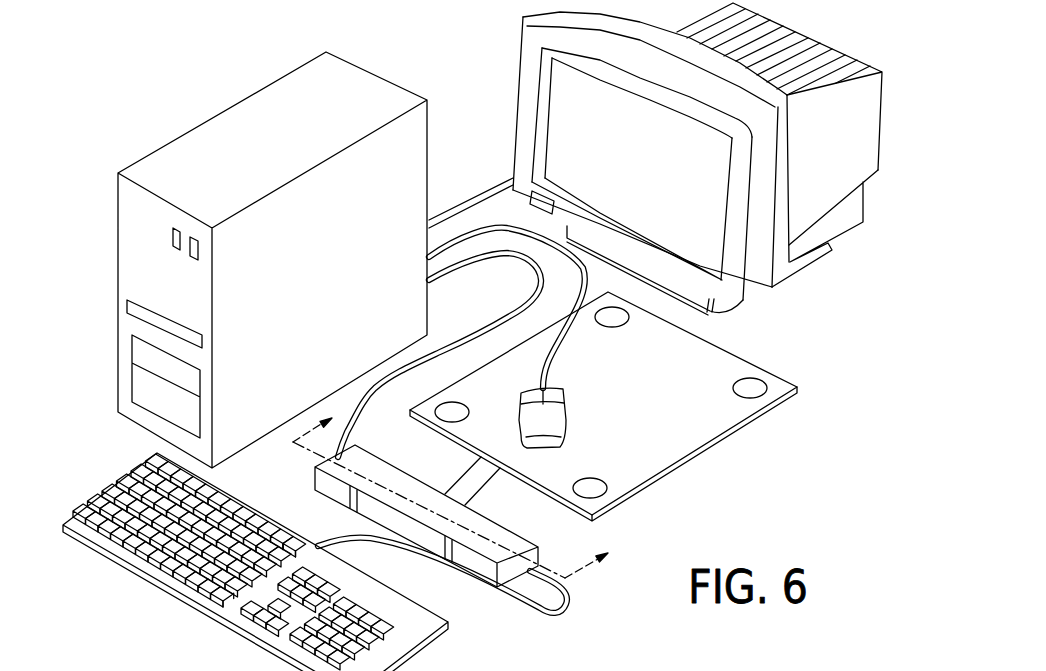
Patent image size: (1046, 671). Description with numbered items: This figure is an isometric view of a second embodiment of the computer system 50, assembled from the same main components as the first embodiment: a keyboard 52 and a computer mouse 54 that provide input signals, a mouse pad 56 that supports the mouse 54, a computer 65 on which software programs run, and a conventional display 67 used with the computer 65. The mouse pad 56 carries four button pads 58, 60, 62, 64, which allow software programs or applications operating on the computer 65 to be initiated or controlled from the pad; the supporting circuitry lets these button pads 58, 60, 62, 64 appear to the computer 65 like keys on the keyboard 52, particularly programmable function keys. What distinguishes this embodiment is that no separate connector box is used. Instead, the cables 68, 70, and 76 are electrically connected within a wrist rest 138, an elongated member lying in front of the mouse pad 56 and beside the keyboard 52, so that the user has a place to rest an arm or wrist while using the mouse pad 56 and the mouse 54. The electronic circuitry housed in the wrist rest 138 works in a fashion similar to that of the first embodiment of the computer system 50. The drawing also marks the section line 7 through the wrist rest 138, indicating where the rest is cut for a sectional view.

The computer system 50 is at (793, 348).
The keyboard 52 is at (428, 643).
The computer mouse 54 is at (567, 418).
The mouse pad 56 is at (692, 460).
The button pad 58 is at (629, 317).
The button pad 60 is at (464, 402).
The button pad 62 is at (607, 497).
The button pad 64 is at (763, 397).
The computer 65 is at (427, 148).
The display 67 is at (518, 80).
The cable 68 is at (572, 605).
The cable 70 is at (357, 412).
The cable 76 is at (457, 483).
The wrist rest 138 is at (524, 533).
The section line 7- 7 is at (450, 498).